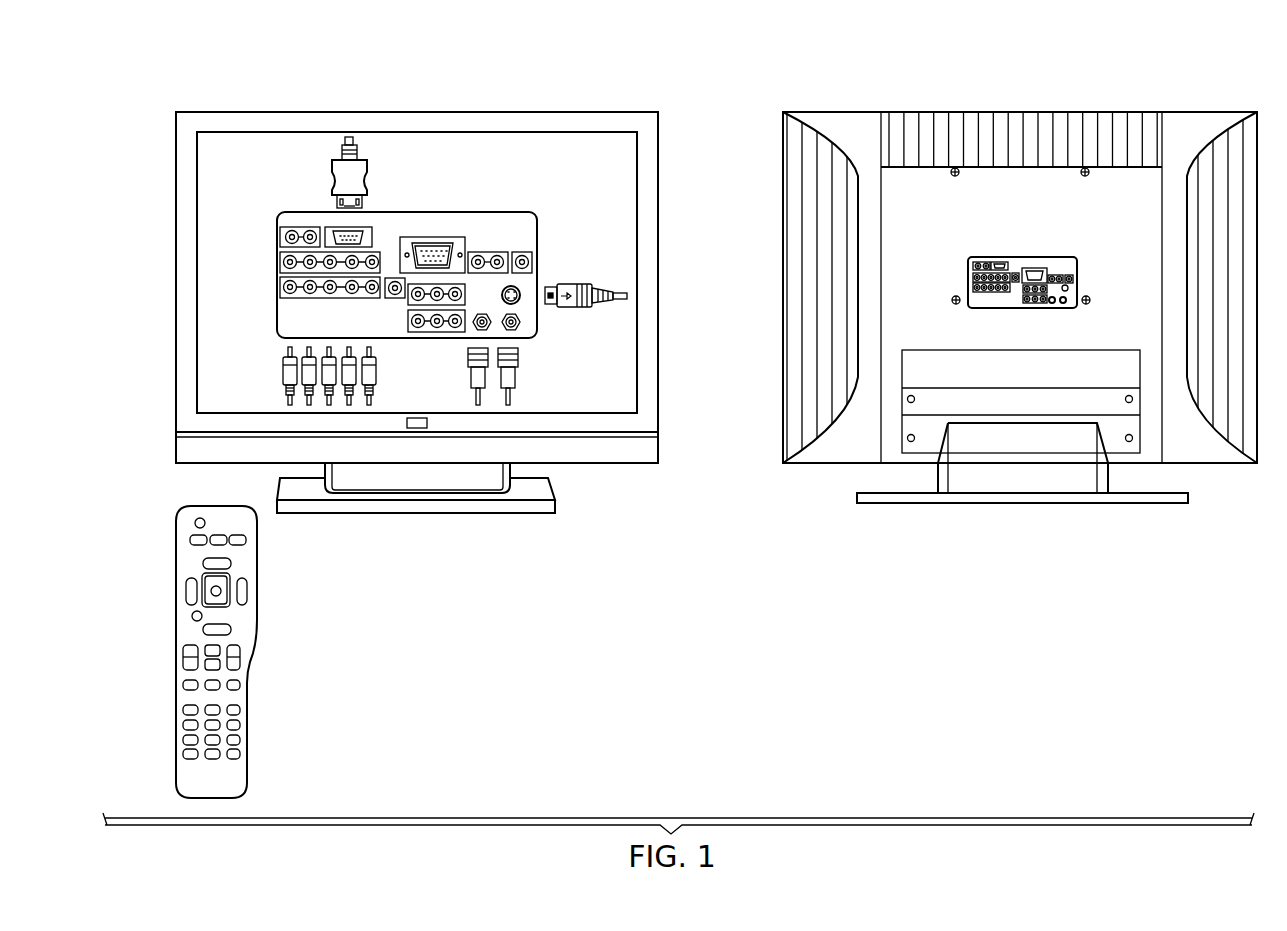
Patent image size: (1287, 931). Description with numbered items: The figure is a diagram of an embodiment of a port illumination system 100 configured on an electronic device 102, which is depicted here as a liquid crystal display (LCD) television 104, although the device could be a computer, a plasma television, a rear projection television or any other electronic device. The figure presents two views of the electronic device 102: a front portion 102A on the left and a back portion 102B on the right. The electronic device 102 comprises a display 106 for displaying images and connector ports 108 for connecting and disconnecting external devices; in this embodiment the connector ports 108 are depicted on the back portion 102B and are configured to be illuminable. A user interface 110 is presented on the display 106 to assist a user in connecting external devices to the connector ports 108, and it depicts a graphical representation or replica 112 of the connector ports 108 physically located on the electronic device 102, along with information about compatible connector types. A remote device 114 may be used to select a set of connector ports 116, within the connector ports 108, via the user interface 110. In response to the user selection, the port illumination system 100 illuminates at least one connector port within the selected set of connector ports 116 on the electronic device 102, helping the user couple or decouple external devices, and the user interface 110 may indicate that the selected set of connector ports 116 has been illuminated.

The port illumination system 100 is at (922, 660).
The electronic device 102 is at (272, 95).
The front portion 102A is at (605, 465).
The back portion 102B is at (828, 464).
The liquid crystal display (LCD) television 104 is at (447, 123).
The display 106 is at (185, 290).
The connector ports 108 is at (1077, 264).
The user interface 110 is at (528, 145).
The graphical representation or replica 112 is at (536, 238).
The remote device 114 is at (173, 653).
The set of connector ports 116 is at (305, 298).